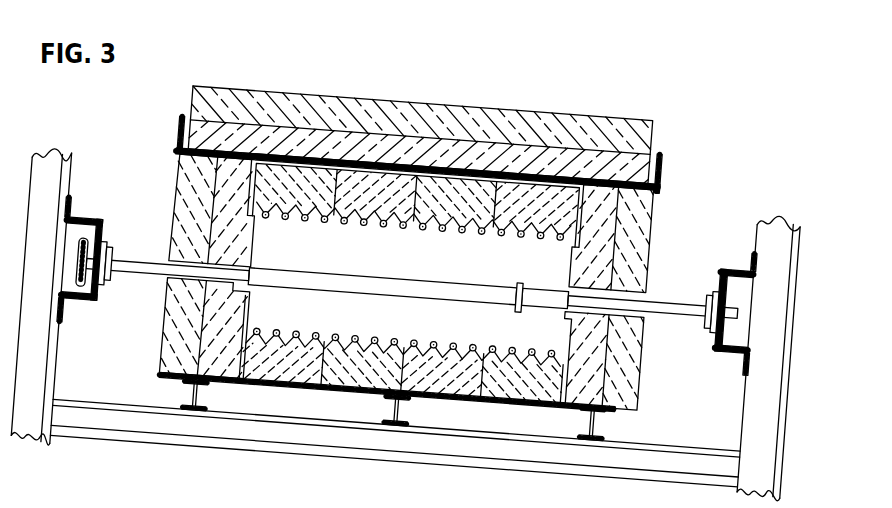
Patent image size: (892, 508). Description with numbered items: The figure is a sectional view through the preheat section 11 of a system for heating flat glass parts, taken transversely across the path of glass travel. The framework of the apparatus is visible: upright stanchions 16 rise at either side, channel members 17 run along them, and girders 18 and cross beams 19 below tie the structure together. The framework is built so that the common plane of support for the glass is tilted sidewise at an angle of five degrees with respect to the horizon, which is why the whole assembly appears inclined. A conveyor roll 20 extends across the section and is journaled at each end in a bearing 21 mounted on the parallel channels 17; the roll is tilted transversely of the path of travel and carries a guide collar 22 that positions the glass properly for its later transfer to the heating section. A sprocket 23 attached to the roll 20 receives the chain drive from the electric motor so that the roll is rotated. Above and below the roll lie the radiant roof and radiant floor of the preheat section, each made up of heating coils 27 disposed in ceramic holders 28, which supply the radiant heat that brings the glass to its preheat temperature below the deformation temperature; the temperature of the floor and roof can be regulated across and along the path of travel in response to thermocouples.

The preheat section 11 is at (208, 72).
The stanchion 16 is at (54, 361).
The channel member 17 is at (97, 300).
The girder 18 is at (393, 420).
The cross beam 19 is at (425, 453).
The conveyor roll 20 is at (352, 270).
The bearing 21 is at (109, 253).
The guide collar 22 is at (519, 284).
The sprocket 23 is at (79, 232).
The heating coil 27 is at (518, 240).
The ceramic holder 28 is at (426, 231).